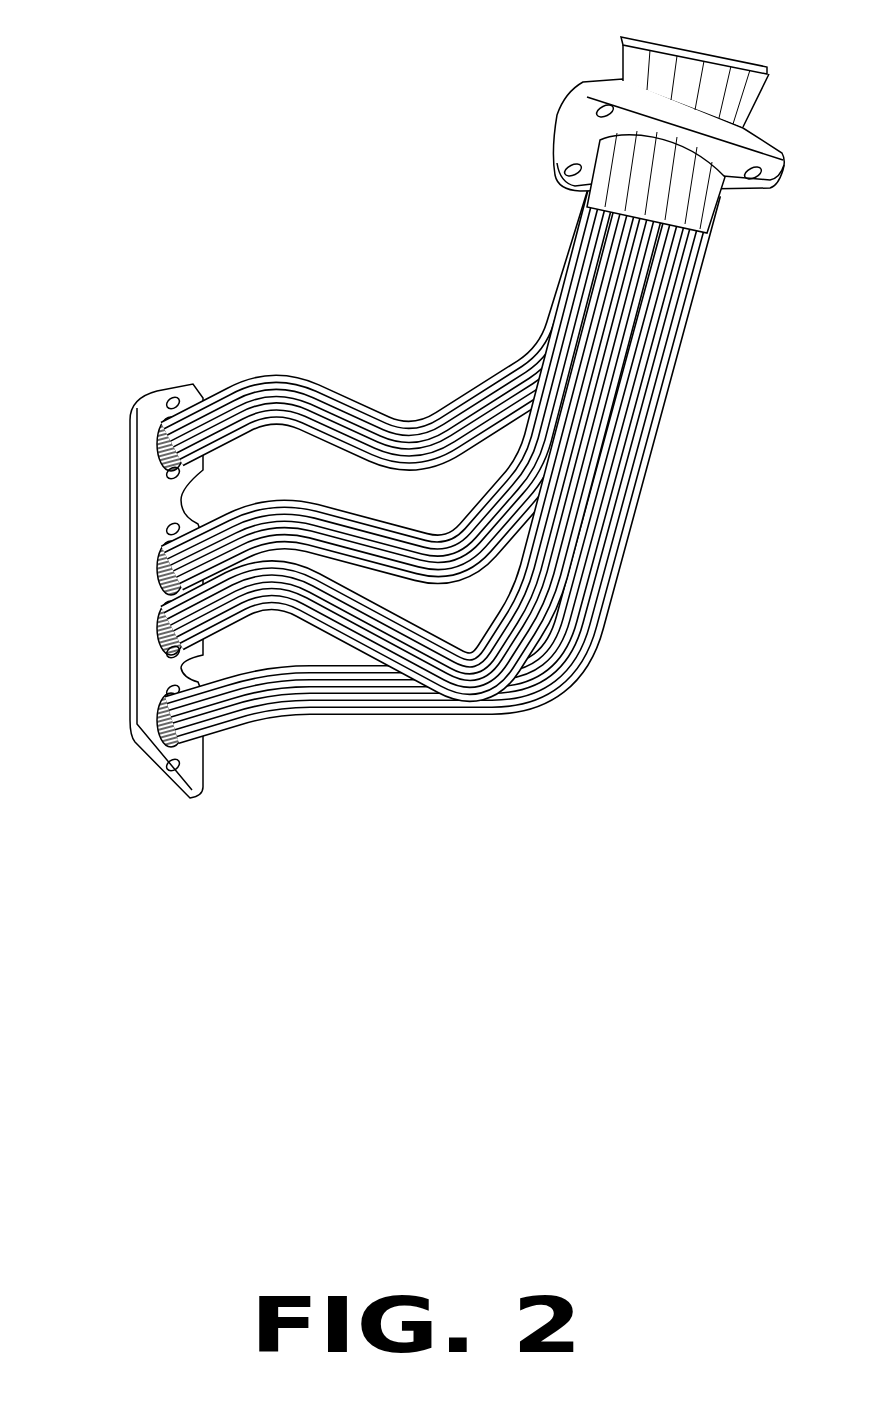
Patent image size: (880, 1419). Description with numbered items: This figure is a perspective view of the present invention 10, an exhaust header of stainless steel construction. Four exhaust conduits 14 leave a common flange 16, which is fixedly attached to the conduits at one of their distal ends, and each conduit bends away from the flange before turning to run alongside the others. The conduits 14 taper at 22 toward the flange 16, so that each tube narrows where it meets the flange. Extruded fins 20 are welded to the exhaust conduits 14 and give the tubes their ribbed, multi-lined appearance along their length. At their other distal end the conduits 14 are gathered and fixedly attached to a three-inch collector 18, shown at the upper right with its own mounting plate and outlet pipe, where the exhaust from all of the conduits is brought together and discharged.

The exhaust header 10 is at (403, 417).
The exhaust conduits 14 is at (281, 383).
The flange 16 is at (130, 668).
The collector 18 is at (617, 195).
The extruded fins 20 is at (546, 381).
The taper 22 is at (183, 603).